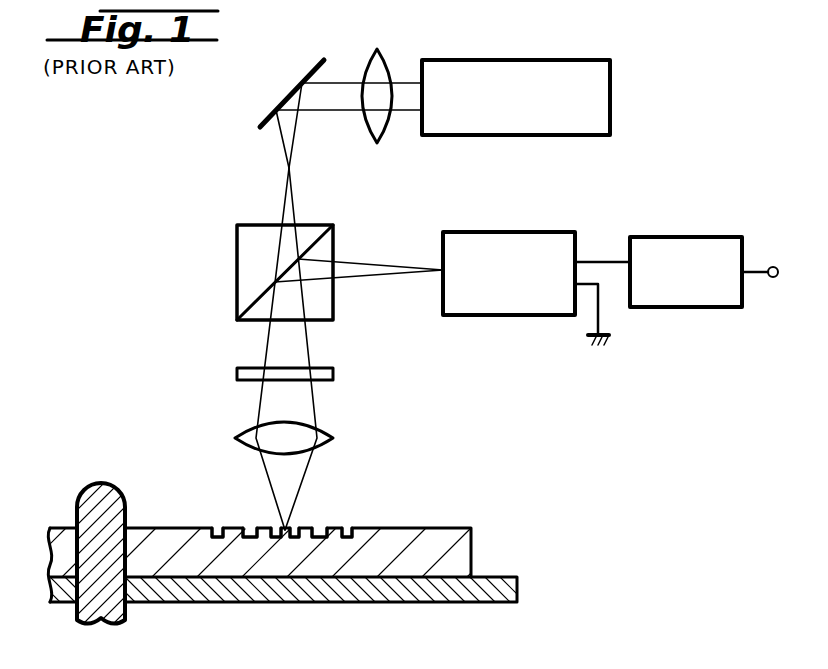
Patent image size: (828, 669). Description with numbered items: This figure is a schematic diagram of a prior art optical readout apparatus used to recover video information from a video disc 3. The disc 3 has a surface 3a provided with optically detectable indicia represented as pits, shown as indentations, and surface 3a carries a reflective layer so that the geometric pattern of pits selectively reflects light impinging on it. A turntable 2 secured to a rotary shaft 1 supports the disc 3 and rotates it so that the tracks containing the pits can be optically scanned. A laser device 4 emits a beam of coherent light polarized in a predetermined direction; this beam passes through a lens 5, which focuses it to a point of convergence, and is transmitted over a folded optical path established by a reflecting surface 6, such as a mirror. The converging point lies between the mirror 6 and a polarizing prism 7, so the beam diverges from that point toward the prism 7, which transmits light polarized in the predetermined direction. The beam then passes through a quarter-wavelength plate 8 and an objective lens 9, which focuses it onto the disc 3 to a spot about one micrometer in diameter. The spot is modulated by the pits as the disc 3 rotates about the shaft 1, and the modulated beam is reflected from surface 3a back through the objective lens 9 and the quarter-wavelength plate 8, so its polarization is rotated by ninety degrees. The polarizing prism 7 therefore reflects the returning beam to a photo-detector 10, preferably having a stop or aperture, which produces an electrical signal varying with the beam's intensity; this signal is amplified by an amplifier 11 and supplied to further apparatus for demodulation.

The rotary shaft 1 is at (122, 500).
The turntable 2 is at (517, 578).
The video disc 3 is at (472, 536).
The surface 3a is at (334, 522).
The laser device 4 is at (560, 138).
The lens 5 is at (368, 63).
The reflecting surface 6 is at (292, 100).
The polarizing prism 7 is at (300, 224).
The quarter-wavelength plate 8 is at (325, 366).
The objective lens 9 is at (320, 434).
The photo-detector 10 is at (504, 231).
The amplifier 11 is at (692, 237).